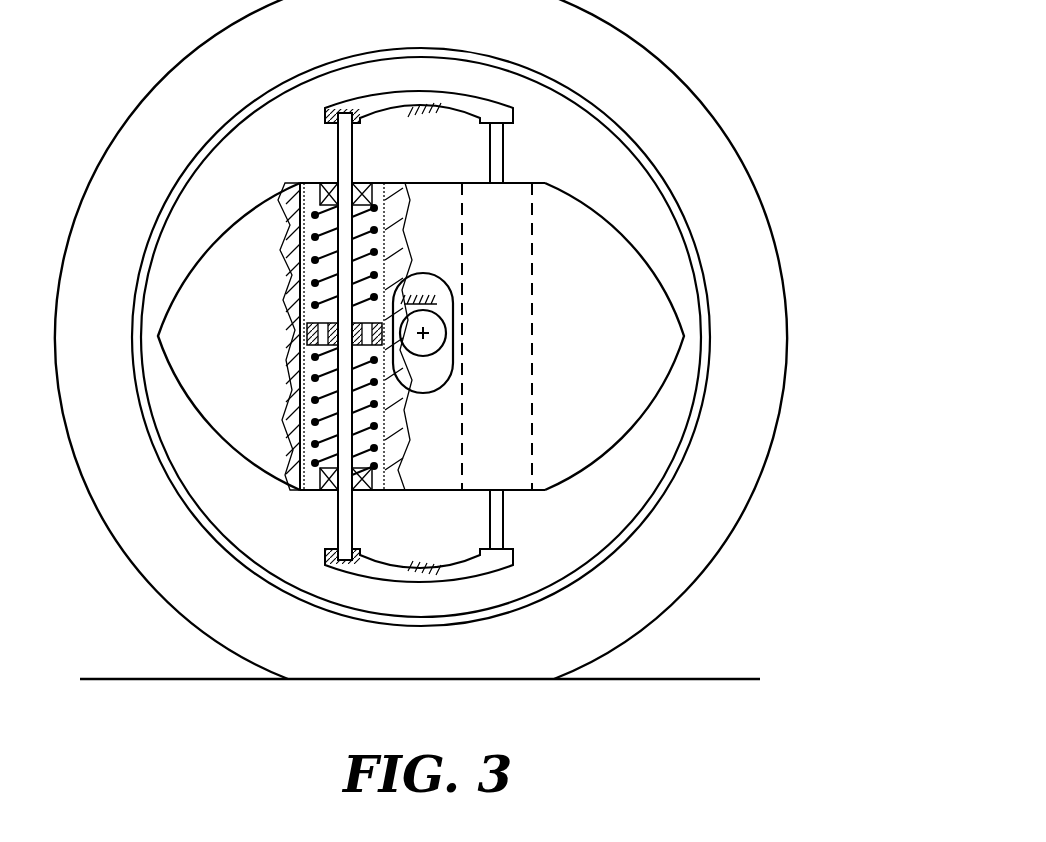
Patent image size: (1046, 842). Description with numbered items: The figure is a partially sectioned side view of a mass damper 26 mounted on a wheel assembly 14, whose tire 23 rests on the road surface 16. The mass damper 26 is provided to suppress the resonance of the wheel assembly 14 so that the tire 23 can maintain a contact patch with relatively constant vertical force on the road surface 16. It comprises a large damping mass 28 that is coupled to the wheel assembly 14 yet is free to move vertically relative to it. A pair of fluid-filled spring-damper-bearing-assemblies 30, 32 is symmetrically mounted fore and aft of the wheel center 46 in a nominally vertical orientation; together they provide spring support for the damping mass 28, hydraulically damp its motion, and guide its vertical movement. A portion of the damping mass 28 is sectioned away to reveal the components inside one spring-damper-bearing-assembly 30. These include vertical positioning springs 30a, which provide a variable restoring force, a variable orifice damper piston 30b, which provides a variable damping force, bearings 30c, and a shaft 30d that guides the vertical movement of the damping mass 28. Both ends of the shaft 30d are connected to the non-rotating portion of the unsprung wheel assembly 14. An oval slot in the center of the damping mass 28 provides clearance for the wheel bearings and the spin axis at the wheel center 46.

The wheel assembly 14 is at (468, 49).
The road surface 16 is at (728, 679).
The tire 23 is at (783, 214).
The mass damper 26 is at (548, 179).
The damping mass 28 is at (589, 206).
The spring-damper-bearing-assembly 30 is at (372, 491).
The vertical positioning springs 30a is at (286, 251).
The variable orifice damper piston 30b is at (305, 334).
The bearings 30c is at (302, 185).
The shaft 30d is at (336, 522).
The spring-damper-bearing-assembly 32 is at (513, 493).
The wheel center 46 is at (423, 335).